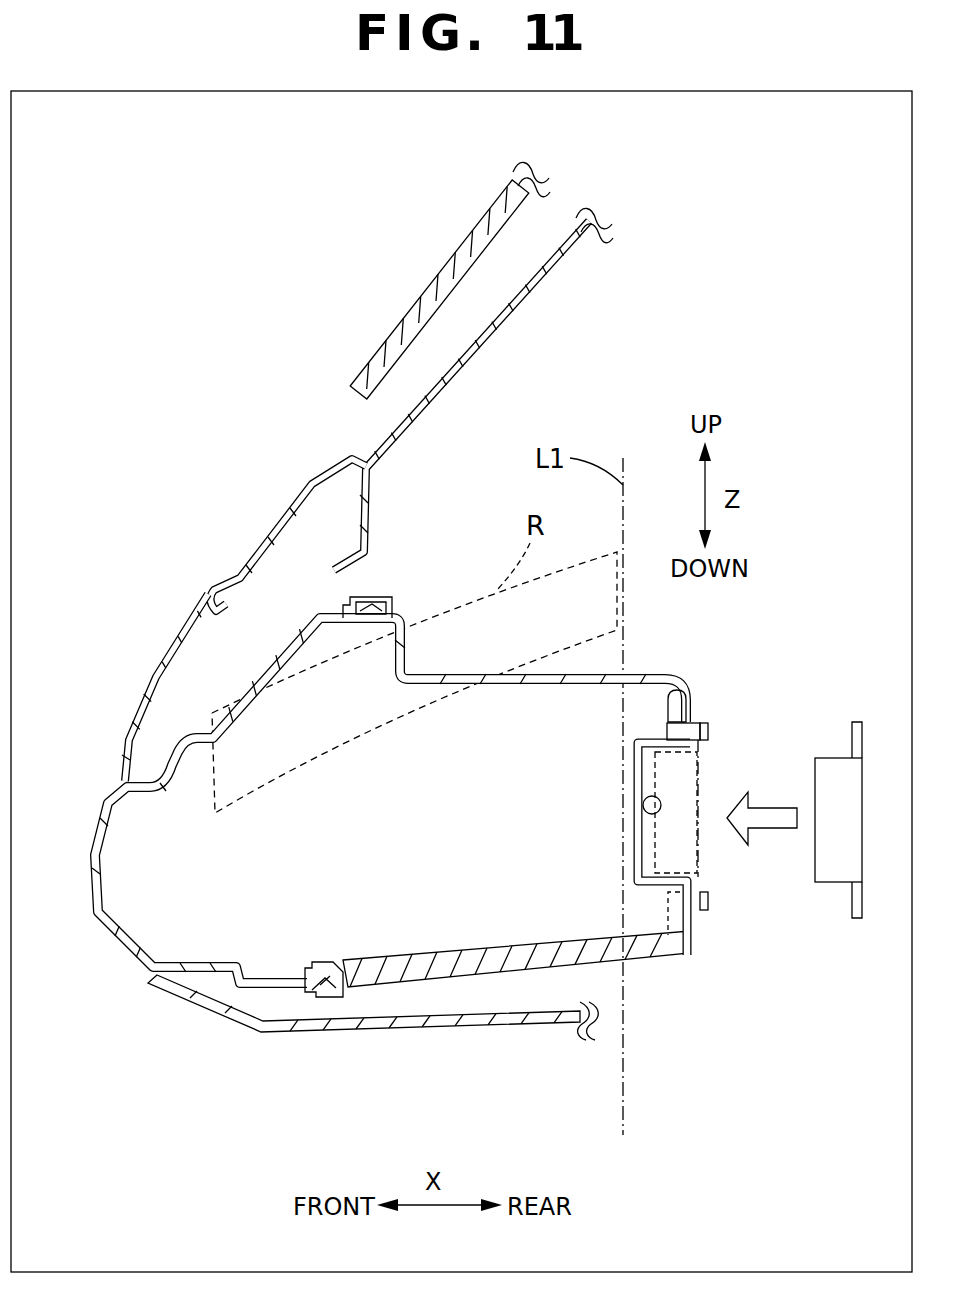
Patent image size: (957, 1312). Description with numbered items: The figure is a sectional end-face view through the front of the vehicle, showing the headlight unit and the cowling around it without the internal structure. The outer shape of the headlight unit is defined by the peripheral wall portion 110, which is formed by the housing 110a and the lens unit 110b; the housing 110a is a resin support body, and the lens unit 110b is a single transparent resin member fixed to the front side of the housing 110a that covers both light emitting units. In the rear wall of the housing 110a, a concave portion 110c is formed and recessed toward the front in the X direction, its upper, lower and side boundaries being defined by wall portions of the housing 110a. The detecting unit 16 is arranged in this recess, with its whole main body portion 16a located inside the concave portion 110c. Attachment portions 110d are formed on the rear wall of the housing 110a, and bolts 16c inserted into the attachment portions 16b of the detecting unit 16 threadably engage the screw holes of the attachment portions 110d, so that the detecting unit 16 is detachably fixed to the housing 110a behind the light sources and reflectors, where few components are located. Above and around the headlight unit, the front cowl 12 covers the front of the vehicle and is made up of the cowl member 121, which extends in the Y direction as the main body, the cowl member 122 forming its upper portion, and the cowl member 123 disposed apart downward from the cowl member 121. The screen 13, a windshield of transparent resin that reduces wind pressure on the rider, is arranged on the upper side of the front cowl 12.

The front cowl 12 is at (356, 494).
The screen 13 is at (467, 245).
The detecting unit 16 is at (758, 850).
The main body portion 16a is at (703, 788).
The attachment portion 16b is at (703, 718).
The bolt 16c is at (710, 728).
The peripheral wall portion 110 is at (402, 841).
The housing 110a is at (665, 960).
The lens unit 110b is at (107, 923).
The concave portion 110c is at (650, 820).
The attachment portion 110d is at (673, 688).
The cowl member 121 is at (200, 608).
The cowl member 122 is at (323, 485).
The cowl member 123 is at (350, 1033).